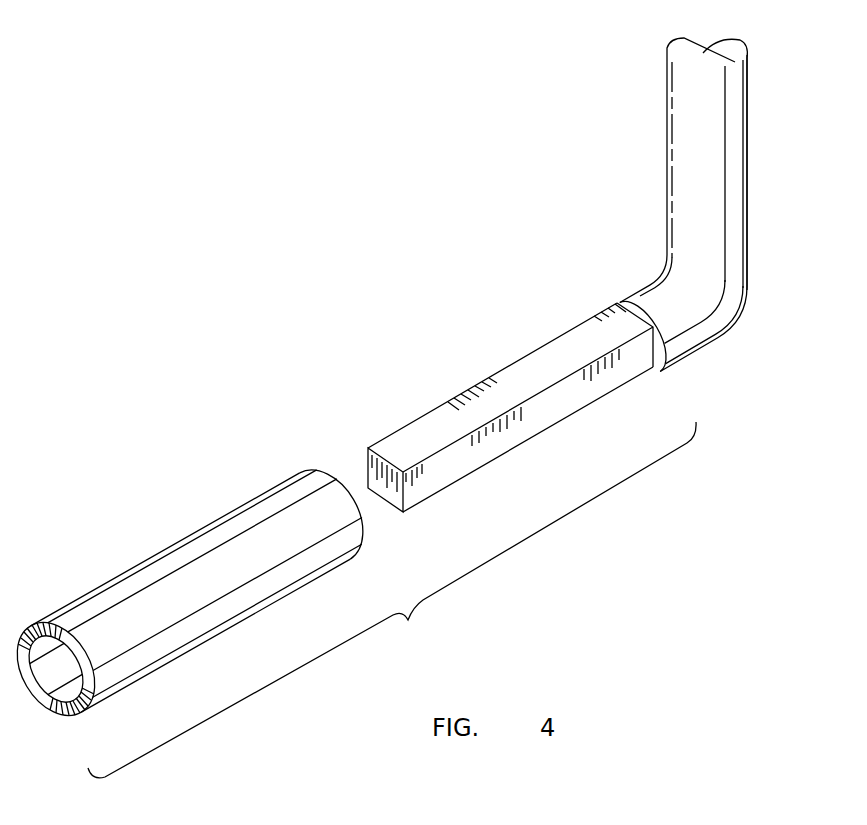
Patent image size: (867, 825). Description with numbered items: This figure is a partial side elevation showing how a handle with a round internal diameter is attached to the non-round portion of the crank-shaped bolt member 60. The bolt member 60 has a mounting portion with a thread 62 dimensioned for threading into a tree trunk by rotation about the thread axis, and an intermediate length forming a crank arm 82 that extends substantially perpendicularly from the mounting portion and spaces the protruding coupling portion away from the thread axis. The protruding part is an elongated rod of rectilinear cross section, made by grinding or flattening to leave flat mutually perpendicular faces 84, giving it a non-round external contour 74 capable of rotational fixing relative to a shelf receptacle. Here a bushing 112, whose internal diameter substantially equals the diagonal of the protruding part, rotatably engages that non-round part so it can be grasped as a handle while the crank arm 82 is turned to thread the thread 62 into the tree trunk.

The bolt member 60 is at (756, 157).
The crank arm 82 is at (675, 112).
The thread 62 is at (562, 335).
The flat mutually perpendicular faces 84 is at (404, 480).
The external contour 74 is at (527, 418).
The bushing 112 is at (133, 577).